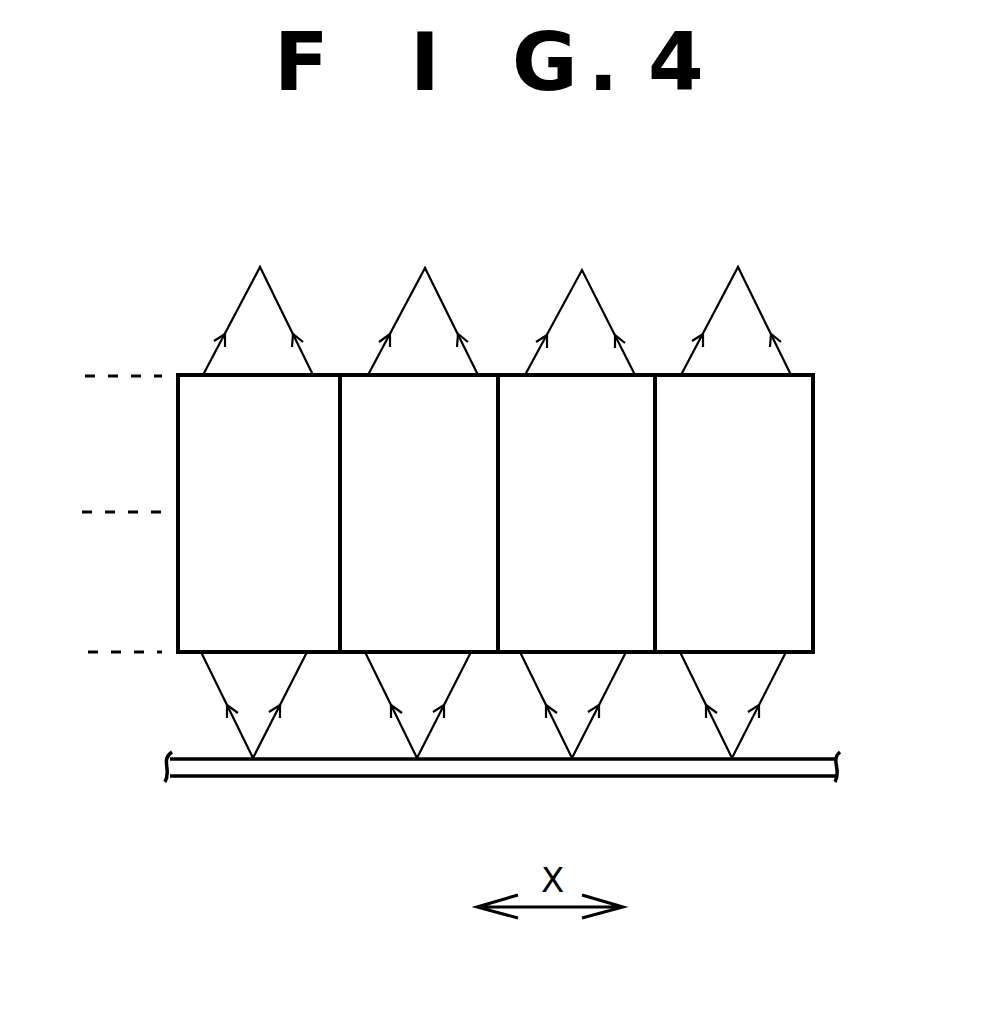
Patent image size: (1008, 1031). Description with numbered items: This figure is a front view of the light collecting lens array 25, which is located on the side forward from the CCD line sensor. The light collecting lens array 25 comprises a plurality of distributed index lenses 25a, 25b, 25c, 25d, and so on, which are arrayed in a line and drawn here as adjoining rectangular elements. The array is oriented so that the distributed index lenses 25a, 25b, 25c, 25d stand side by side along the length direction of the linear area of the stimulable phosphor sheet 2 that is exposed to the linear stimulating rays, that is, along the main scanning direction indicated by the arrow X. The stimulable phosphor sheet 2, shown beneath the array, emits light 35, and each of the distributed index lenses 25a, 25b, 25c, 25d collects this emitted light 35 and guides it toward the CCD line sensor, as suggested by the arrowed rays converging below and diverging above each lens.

The light collecting lens array 25 is at (469, 452).
The distributed index lens 25a is at (785, 396).
The distributed index lens 25b is at (627, 400).
The distributed index lens 25c is at (480, 396).
The distributed index lens 25d is at (327, 396).
The emitted light 35 is at (772, 682).
The stimulable phosphor sheet 2 is at (772, 777).